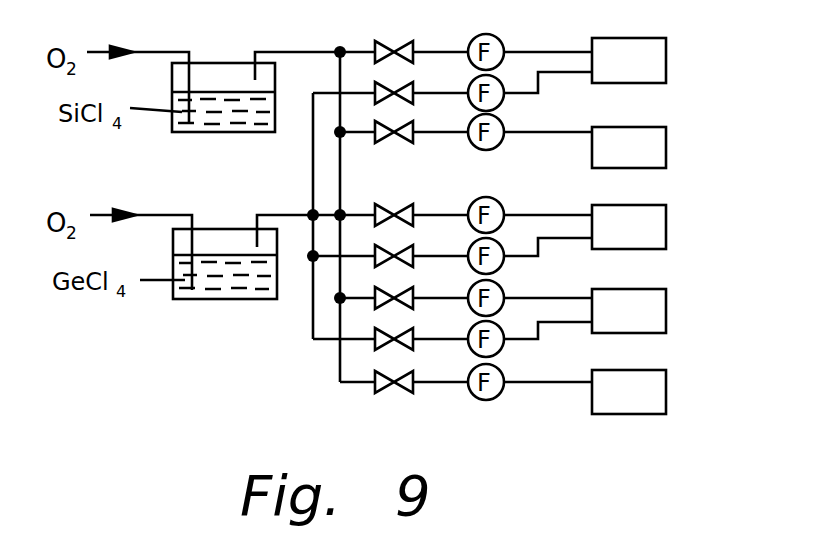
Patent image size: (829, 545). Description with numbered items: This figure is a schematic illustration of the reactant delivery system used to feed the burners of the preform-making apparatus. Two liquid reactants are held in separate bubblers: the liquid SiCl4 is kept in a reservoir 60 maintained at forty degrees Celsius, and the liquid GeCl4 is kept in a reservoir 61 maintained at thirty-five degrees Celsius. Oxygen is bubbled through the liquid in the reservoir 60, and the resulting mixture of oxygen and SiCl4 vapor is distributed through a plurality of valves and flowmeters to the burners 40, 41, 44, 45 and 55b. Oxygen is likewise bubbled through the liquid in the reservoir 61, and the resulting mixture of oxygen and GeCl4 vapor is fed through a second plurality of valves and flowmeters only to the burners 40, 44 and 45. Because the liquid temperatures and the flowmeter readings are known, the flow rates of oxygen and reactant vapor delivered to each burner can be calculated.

The reservoir 60 is at (222, 133).
The reservoir 61 is at (226, 300).
The burner 40 is at (666, 60).
The burner 41 is at (666, 147).
The burner 44 is at (666, 224).
The burner 45 is at (666, 311).
The burner 55b is at (666, 392).